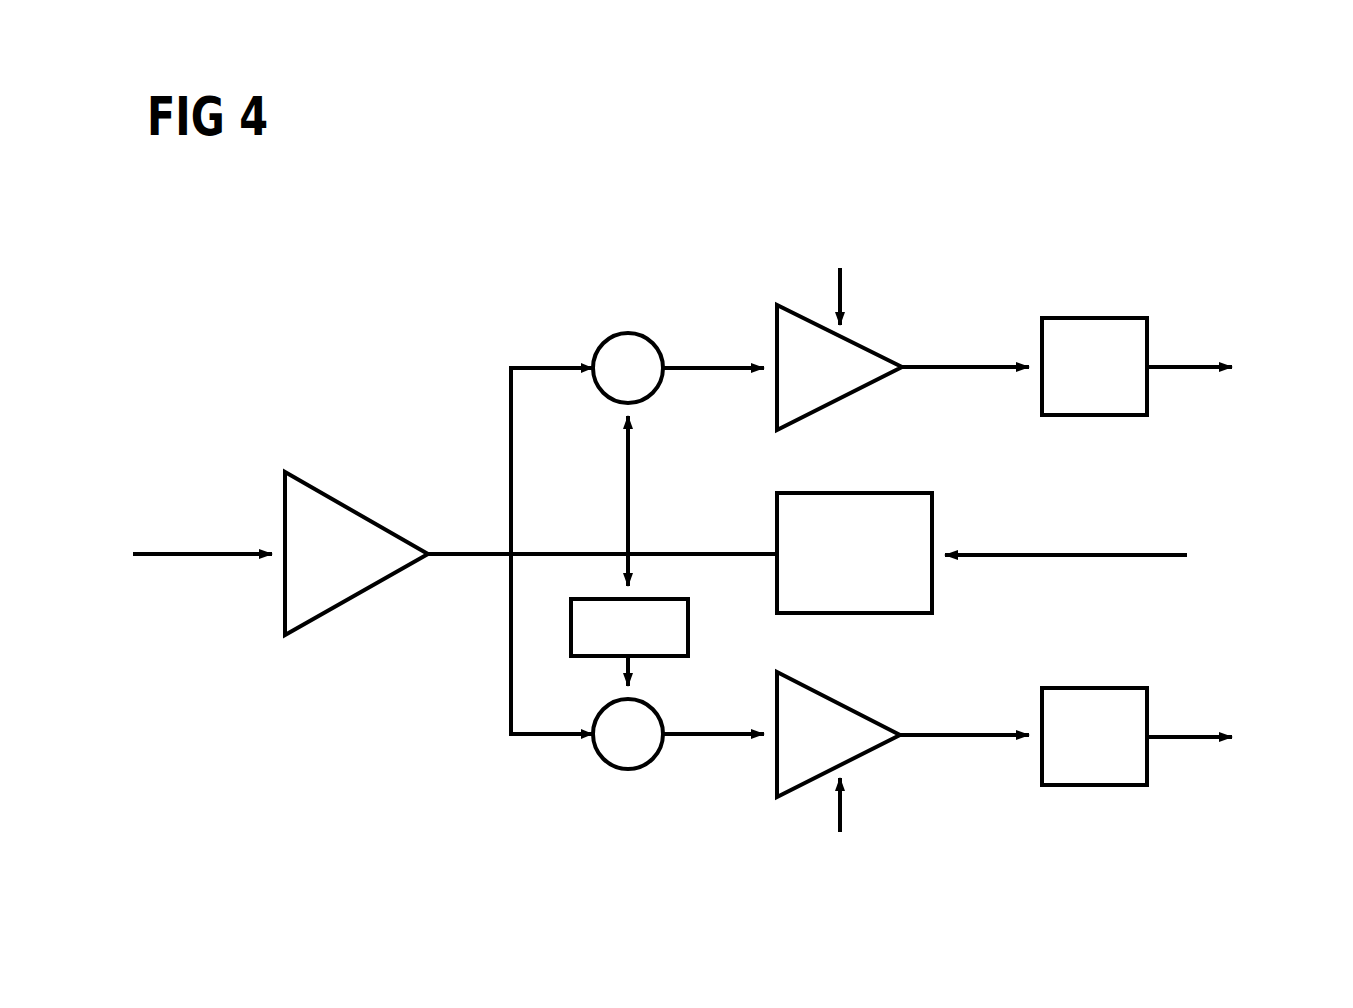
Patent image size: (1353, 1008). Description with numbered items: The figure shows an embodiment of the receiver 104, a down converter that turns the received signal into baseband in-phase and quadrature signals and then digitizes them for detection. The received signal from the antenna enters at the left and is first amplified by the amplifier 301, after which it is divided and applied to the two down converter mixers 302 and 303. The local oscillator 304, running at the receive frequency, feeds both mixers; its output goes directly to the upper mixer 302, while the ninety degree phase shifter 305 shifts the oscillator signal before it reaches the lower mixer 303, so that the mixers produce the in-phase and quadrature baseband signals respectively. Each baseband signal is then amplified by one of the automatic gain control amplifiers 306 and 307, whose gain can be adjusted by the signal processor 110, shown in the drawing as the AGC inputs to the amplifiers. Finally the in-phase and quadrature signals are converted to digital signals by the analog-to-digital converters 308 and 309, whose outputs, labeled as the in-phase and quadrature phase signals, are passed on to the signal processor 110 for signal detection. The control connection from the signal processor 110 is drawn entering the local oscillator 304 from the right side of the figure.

The receiver 104 is at (448, 415).
The signal processor 110 is at (1245, 565).
The amplifier 301 is at (322, 488).
The mixer 302 is at (625, 333).
The mixer 303 is at (605, 765).
The local oscillator 304 is at (932, 505).
The 90 degree phase shifter 305 is at (688, 632).
The automatic gain control amplifier 306 is at (866, 345).
The automatic gain control amplifier 307 is at (878, 747).
The analog-to-digital converter 308 is at (1090, 318).
The analog-to-digital converter 309 is at (1090, 688).